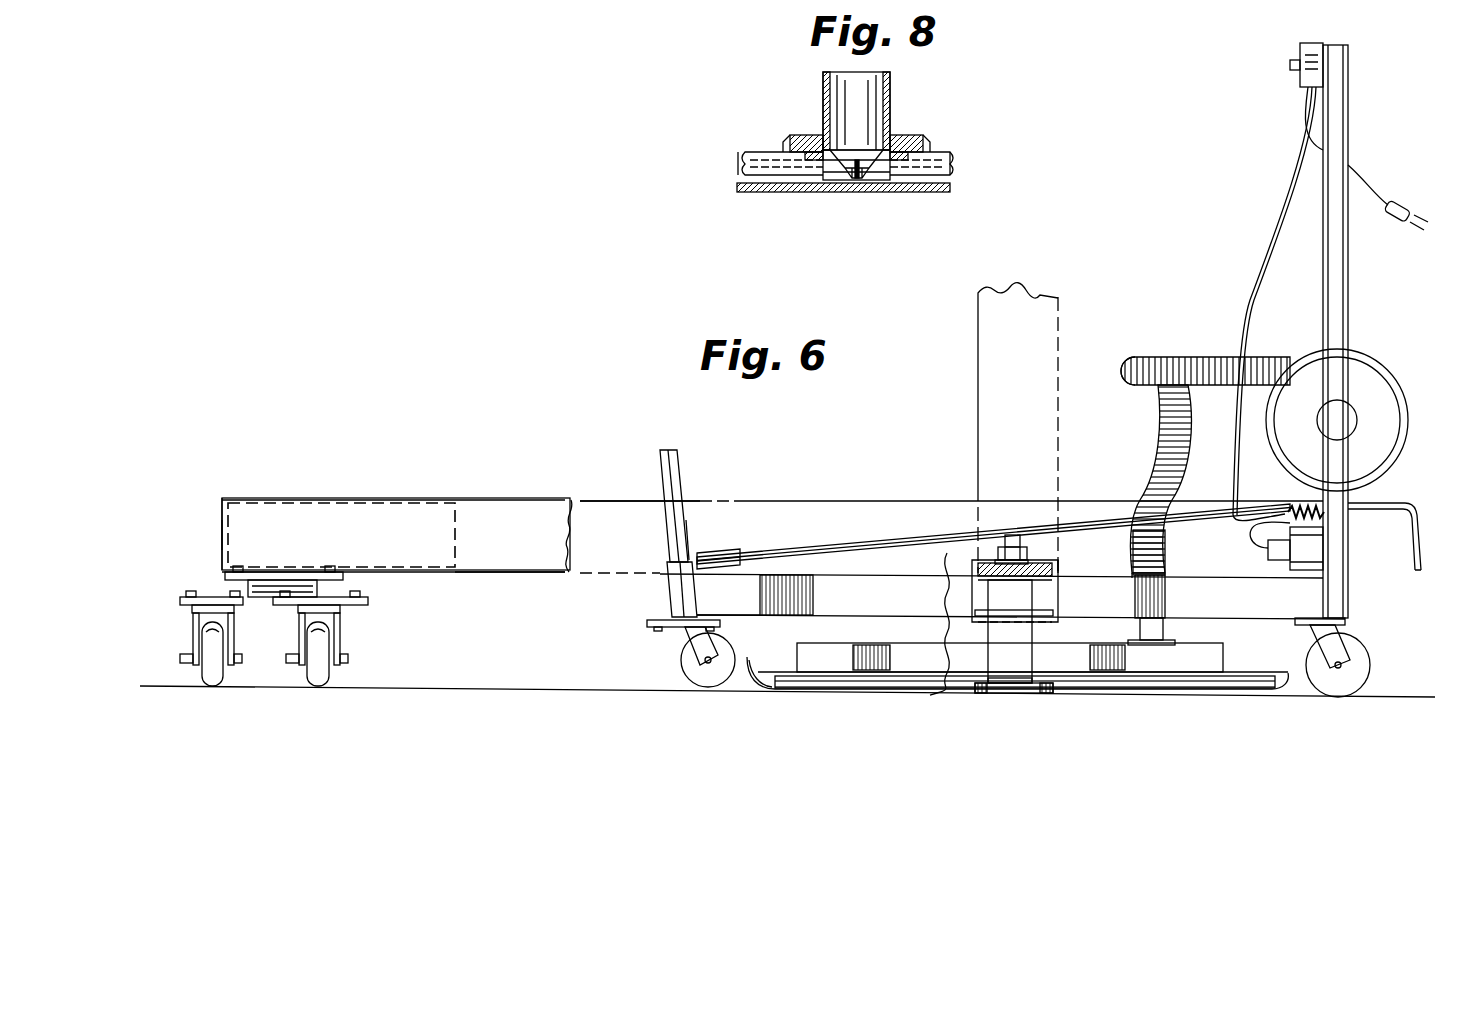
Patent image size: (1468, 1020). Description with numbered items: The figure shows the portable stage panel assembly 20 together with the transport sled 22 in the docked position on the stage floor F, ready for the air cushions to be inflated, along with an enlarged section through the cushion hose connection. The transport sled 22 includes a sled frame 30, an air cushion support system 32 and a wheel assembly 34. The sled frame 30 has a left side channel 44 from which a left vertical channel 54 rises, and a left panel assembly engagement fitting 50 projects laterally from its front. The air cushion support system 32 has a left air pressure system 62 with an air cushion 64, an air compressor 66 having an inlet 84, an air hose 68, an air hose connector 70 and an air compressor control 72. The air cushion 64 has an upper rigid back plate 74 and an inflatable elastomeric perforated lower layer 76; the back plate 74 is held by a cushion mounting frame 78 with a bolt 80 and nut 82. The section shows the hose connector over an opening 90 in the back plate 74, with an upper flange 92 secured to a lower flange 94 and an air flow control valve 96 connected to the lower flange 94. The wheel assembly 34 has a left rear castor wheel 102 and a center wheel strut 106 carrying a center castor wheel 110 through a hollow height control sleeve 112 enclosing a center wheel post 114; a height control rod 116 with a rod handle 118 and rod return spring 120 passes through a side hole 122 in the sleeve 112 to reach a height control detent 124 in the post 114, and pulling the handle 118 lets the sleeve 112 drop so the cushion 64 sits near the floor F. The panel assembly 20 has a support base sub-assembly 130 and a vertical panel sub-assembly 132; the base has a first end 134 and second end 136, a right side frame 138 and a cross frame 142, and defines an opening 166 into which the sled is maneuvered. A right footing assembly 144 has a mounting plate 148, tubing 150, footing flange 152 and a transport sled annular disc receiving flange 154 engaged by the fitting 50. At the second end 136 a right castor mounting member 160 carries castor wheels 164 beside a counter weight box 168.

In FIG. 6, the portable stage panel assembly 20 is at (568, 465).
In FIG. 6, the transport sled 22 is at (1215, 249).
In FIG. 6, the sled frame 30 is at (1135, 530).
In FIG. 6, the air cushion support system 32 is at (1290, 338).
In FIG. 6, the wheel assembly 34 is at (678, 690).
In FIG. 6, the left side channel 44 is at (1188, 573).
In FIG. 6, the left panel assembly engagement fitting 50 is at (1040, 662).
In FIG. 6, the left vertical channel 54 is at (1348, 267).
In FIG. 6, the left air pressure system 62 is at (1400, 354).
In FIG. 8, the air cushion 64 is at (952, 176).
In FIG. 6, the air cushion 64 is at (1287, 673).
In FIG. 6, the air compressor 66 is at (1405, 405).
In FIG. 6, the air hose 68 is at (1190, 356).
In FIG. 8, the air hose connector 70 is at (930, 117).
In FIG. 6, the air hose connector 70 is at (1178, 637).
In FIG. 6, the air compressor control 72 is at (1298, 54).
In FIG. 8, the upper rigid back plate 74 is at (760, 152).
In FIG. 6, the upper rigid back plate 74 is at (745, 688).
In FIG. 8, the inflatable elastomeric perforated lower layer 76 is at (752, 190).
In FIG. 6, the inflatable elastomeric perforated lower layer 76 is at (855, 690).
In FIG. 6, the cushion mounting frame 78 is at (888, 643).
In FIG. 6, the bolt 80 is at (1010, 533).
In FIG. 6, the nut 82 is at (998, 553).
In FIG. 6, the inlet 84 is at (1360, 418).
In FIG. 8, the opening 90 is at (870, 186).
In FIG. 8, the upper flange 92 is at (892, 96).
In FIG. 8, the lower flange 94 is at (928, 143).
In FIG. 8, the air flow control valve 96 is at (842, 172).
In FIG. 6, the left rear castor wheel 102 is at (1370, 665).
In FIG. 6, the center wheel strut 106 is at (740, 620).
In FIG. 6, the center castor wheel 110 is at (682, 667).
In FIG. 6, the height control sleeve 112 is at (670, 602).
In FIG. 6, the center wheel post 114 is at (690, 523).
In FIG. 6, the height control rod 116 is at (870, 545).
In FIG. 6, the rod handle 118 is at (1422, 545).
In FIG. 6, the rod return spring 120 is at (1290, 512).
In FIG. 6, the side hole 122 is at (723, 553).
In FIG. 6, the height control detent 124 is at (686, 475).
In FIG. 6, the support base sub-assembly 130 is at (646, 497).
In FIG. 6, the vertical panel sub-assembly 132 is at (962, 426).
In FIG. 6, the first end 134 is at (1056, 520).
In FIG. 6, the second end 136 is at (216, 532).
In FIG. 6, the right side frame 138 is at (530, 574).
In FIG. 6, the cross frame 142 is at (223, 508).
In FIG. 6, the right footing assembly 144 is at (946, 636).
In FIG. 6, the mounting plate 148 is at (1168, 595).
In FIG. 6, the tubing 150 is at (1035, 660).
In FIG. 6, the footing flange 152 is at (982, 693).
In FIG. 6, the transport sled annular disc receiving flange 154 is at (1035, 608).
In FIG. 6, the right castor mounting member 160 is at (250, 592).
In FIG. 6, the castor wheels 164 is at (212, 690).
In FIG. 6, the opening 166 is at (1060, 568).
In FIG. 6, the counter weight box 168 is at (400, 498).
In FIG. 6, the stage floor F is at (476, 686).